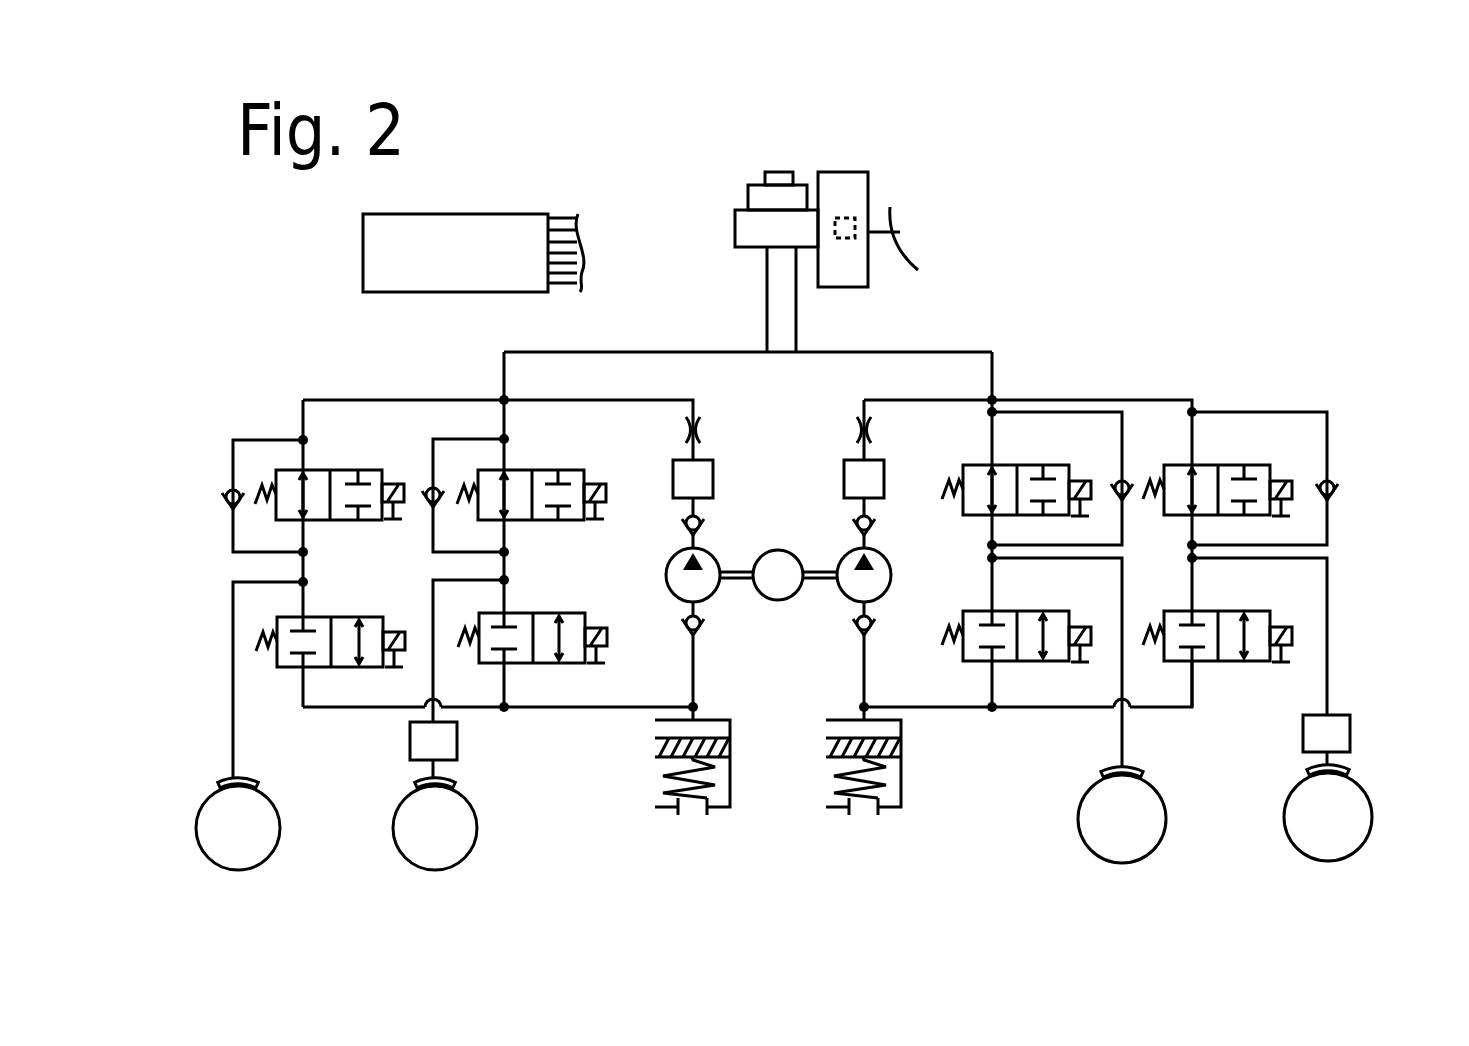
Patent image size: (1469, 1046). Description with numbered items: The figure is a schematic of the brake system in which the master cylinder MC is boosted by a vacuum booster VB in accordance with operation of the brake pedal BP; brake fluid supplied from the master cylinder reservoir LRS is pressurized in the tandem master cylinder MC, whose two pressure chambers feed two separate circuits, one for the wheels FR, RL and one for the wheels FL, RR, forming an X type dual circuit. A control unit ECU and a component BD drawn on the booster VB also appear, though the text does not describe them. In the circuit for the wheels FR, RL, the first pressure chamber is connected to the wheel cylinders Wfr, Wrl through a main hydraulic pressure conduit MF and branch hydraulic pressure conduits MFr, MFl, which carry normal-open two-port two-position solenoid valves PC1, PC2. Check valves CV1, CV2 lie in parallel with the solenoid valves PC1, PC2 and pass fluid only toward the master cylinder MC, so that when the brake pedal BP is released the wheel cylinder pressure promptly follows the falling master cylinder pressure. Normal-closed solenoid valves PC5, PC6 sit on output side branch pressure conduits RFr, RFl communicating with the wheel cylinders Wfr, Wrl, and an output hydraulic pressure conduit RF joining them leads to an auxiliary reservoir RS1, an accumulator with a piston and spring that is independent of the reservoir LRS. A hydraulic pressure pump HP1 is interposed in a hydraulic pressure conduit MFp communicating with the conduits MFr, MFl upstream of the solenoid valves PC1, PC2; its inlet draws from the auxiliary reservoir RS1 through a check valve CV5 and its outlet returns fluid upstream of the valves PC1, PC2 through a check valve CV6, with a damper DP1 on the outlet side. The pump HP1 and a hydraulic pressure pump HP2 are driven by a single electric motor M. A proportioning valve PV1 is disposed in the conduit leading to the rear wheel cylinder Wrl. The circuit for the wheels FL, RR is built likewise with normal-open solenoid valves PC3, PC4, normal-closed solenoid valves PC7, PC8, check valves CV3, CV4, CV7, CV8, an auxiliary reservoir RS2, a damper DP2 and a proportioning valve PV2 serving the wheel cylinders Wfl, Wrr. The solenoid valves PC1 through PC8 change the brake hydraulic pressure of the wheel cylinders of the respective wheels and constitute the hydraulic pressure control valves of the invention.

The electronic control unit ECU is at (473, 253).
The master cylinder MC is at (735, 228).
The master cylinder reservoir LRS is at (749, 188).
The vacuum booster VB is at (855, 287).
The brake pedal depression sensor BD is at (852, 217).
The brake pedal BP is at (897, 233).
The main hydraulic pressure conduit MF is at (503, 365).
The branch hydraulic pressure conduit MFl is at (503, 418).
The branch hydraulic pressure conduit MFr is at (303, 418).
The hydraulic pressure conduit MFp is at (700, 403).
The check valve CV1 is at (228, 490).
The check valve CV2 is at (428, 488).
The check valve CV3 is at (1122, 478).
The check valve CV4 is at (1333, 478).
The check valve CV5 is at (700, 620).
The check valve CV6 is at (702, 520).
The check valve CV7 is at (872, 620).
The check valve CV8 is at (874, 521).
The normal-open type two-port two-position solenoid valve PC1 is at (330, 470).
The normal-open type two-port two-position solenoid valve PC2 is at (532, 470).
The normal open type two-port two-position solenoid valve PC3 is at (1017, 465).
The normal open type two-port two-position solenoid valve PC4 is at (1217, 465).
The normal closed type two-port two-position solenoid valve PC5 is at (332, 617).
The normal closed type two-port two-position solenoid valve PC6 is at (532, 613).
The normal closed type two-port two-position solenoid valve PC7 is at (1017, 611).
The normal closed type two-port two-position solenoid valve PC8 is at (1217, 611).
The damper DP1 is at (712, 460).
The damper DP2 is at (885, 460).
The hydraulic pressure pump HP1 is at (710, 555).
The hydraulic pressure pump HP2 is at (892, 580).
The electric motor M is at (778, 575).
The auxiliary reservoir RS1 is at (730, 752).
The auxiliary reservoir RS2 is at (900, 748).
The output hydraulic pressure conduit RF is at (620, 707).
The output side branch pressure conduit RFr is at (365, 710).
The output side branch pressure conduit RFl is at (510, 685).
The proportioning valve PV1 is at (457, 742).
The proportioning valve PV2 is at (1303, 733).
The wheel cylinder Wfr is at (255, 780).
The wheel cylinder Wrl is at (455, 780).
The wheel cylinder front left Wfl is at (1138, 768).
The wheel cylinder rear right Wrr is at (1345, 768).
The wheel FR is at (238, 828).
The wheel RL is at (435, 828).
The wheel FL is at (1122, 819).
The wheel RR is at (1328, 817).